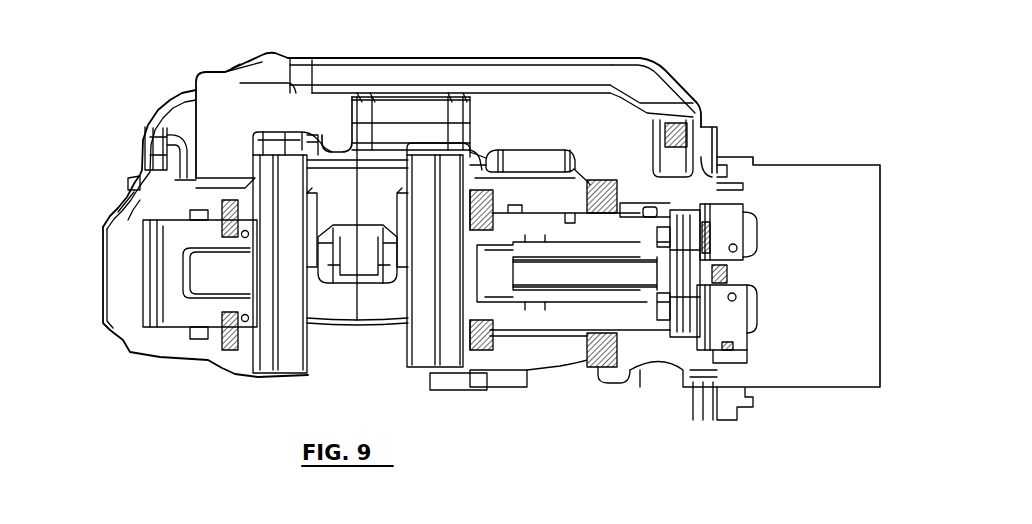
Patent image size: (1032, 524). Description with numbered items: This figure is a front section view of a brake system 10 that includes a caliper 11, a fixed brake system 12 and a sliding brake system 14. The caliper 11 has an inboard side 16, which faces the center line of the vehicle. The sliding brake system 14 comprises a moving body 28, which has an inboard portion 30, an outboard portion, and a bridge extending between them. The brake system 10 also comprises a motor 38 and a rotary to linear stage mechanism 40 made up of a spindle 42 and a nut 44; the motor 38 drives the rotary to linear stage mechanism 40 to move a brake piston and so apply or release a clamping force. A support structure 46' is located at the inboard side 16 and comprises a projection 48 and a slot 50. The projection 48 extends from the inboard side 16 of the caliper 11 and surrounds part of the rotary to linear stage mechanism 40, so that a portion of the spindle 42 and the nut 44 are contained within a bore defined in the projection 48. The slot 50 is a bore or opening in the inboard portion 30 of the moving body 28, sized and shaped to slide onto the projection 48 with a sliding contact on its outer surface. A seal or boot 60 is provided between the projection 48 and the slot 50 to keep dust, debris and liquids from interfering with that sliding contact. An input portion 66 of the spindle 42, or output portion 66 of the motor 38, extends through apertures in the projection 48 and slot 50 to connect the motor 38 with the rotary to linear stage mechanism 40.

The brake system 10 is at (188, 63).
The caliper 11 is at (102, 261).
The fixed brake system 12 is at (115, 207).
The sliding brake system 14 is at (687, 71).
The inboard side 16 is at (753, 404).
The moving body 28 is at (475, 60).
The inboard portion 30 is at (608, 383).
The motor 38 is at (853, 370).
The rotary to linear stage mechanism 40 is at (593, 297).
The spindle 42 is at (695, 262).
The nut 44 is at (530, 297).
The support structure 46' is at (741, 138).
The projection 48 is at (639, 203).
The slot 50 is at (637, 363).
The seal or boot 60 is at (598, 357).
The input portion 66 is at (723, 277).